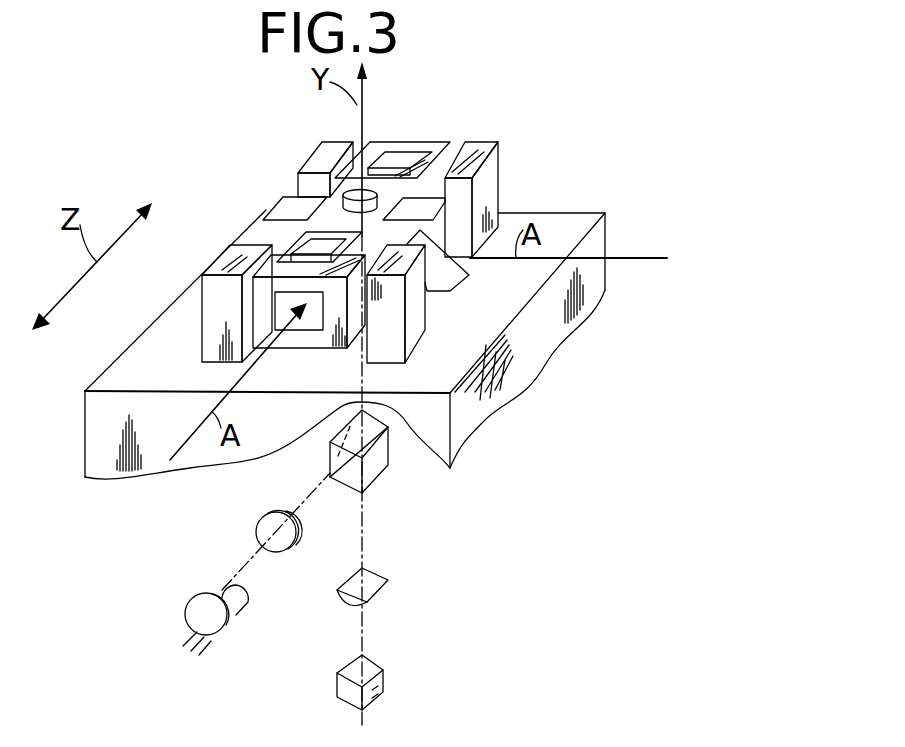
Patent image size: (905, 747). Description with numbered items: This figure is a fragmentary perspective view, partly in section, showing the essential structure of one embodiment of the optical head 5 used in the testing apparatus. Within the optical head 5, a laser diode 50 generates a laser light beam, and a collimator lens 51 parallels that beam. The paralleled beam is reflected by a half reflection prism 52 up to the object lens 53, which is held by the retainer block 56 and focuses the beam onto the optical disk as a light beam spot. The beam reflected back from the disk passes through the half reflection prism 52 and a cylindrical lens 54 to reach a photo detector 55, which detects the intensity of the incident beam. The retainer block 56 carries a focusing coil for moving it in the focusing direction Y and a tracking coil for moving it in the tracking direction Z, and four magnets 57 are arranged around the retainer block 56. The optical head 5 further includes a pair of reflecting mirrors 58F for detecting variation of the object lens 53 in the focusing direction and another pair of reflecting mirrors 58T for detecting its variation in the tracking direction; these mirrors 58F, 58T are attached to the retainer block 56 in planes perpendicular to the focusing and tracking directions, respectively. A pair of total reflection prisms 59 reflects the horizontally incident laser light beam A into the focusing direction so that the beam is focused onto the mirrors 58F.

The optical head 5 is at (570, 210).
The laser diode 50 is at (203, 588).
The collimator lens 51 is at (264, 520).
The half reflection prism 52 is at (387, 477).
The object lens 53 is at (360, 193).
The cylindrical lens 54 is at (388, 580).
The photo detector 55 is at (382, 667).
The retainer block 56 is at (419, 142).
The magnets 57 is at (327, 148).
The reflecting mirrors 58F is at (283, 203).
The reflecting mirrors 58T is at (308, 318).
The total reflection prisms 59 is at (452, 277).